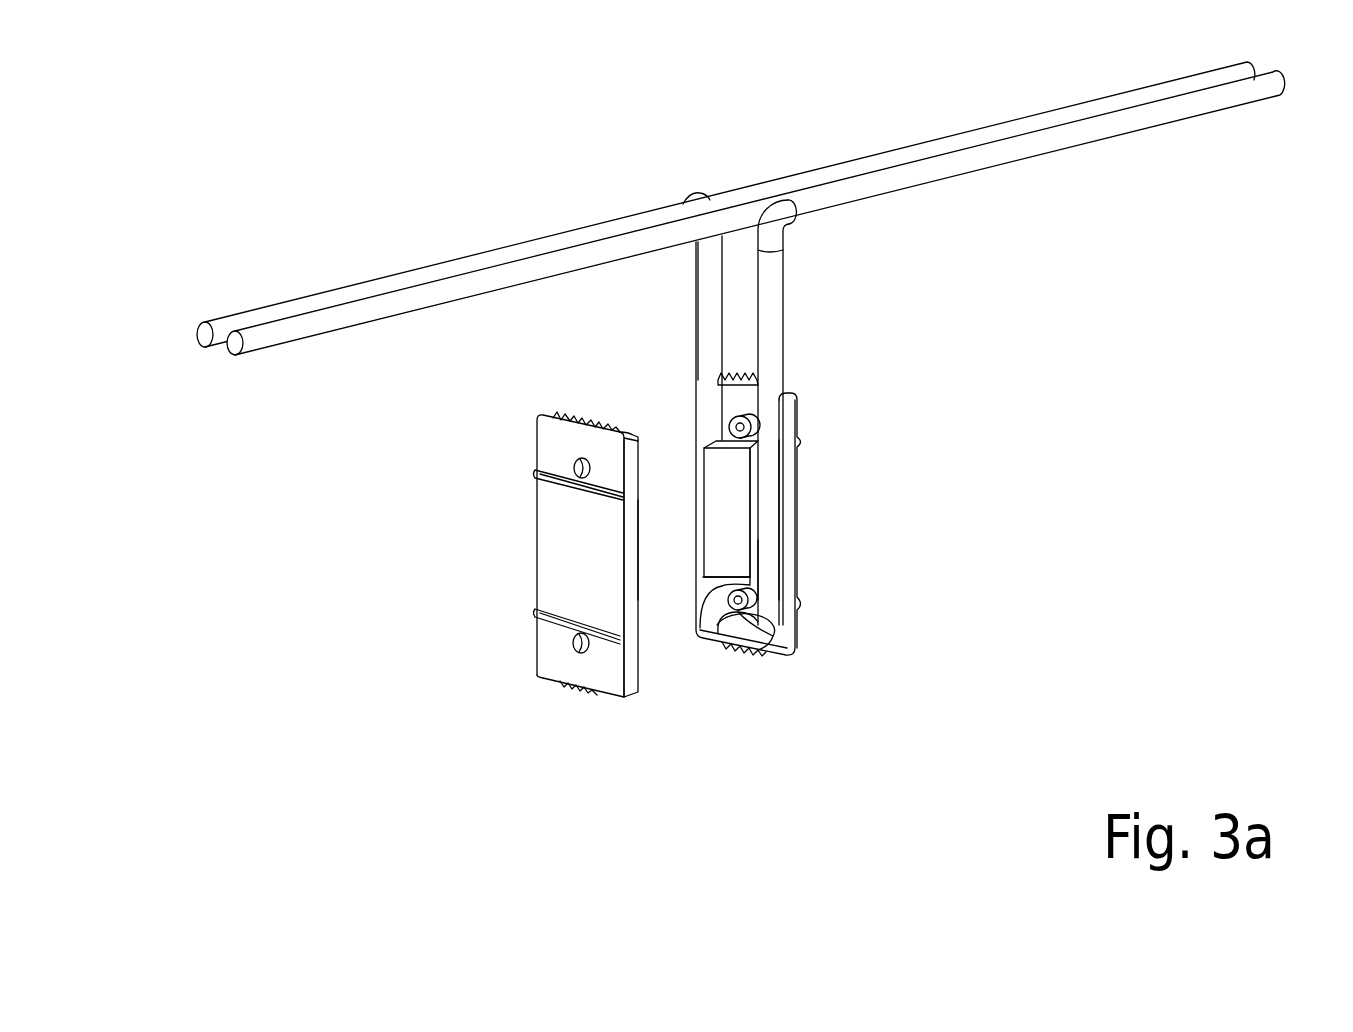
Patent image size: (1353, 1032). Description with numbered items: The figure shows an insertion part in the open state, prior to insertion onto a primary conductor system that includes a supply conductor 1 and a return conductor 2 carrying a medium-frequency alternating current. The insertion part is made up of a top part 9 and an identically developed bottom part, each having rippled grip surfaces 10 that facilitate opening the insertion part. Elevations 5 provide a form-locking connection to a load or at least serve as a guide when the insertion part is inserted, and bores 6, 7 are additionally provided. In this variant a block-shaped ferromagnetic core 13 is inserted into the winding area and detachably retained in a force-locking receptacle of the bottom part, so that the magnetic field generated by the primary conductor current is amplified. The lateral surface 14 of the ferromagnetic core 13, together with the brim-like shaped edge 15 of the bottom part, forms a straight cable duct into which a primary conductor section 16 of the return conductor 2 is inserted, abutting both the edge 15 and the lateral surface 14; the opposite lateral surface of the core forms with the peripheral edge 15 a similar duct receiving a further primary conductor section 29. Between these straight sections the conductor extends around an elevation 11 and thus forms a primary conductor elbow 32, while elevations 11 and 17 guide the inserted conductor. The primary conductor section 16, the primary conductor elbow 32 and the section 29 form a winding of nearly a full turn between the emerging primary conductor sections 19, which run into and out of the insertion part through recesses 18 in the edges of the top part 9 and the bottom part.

The supply conductor 1 is at (855, 175).
The return conductor 2 is at (273, 312).
The elevations 5 is at (810, 440).
The bore 6 is at (575, 648).
The bore 7 is at (582, 465).
The top part 9 is at (630, 630).
The grip surfaces 10 is at (598, 410).
The elevation 11 is at (743, 605).
The ferromagnetic core 13 is at (727, 492).
The lateral surface 14 is at (753, 522).
The brim-like shaped edge 15 is at (780, 535).
The primary conductor section 16 is at (767, 570).
The elevation 17 is at (742, 428).
The recesses 18 is at (562, 408).
The emerging primary conductor sections 19 is at (770, 296).
The primary conductor section 29 is at (683, 528).
The primary conductor elbow 32 is at (773, 657).